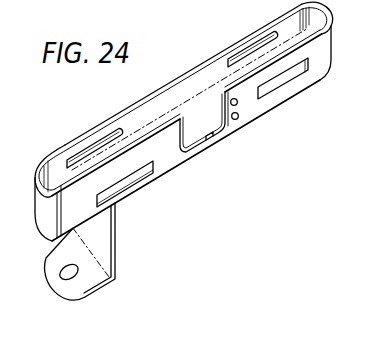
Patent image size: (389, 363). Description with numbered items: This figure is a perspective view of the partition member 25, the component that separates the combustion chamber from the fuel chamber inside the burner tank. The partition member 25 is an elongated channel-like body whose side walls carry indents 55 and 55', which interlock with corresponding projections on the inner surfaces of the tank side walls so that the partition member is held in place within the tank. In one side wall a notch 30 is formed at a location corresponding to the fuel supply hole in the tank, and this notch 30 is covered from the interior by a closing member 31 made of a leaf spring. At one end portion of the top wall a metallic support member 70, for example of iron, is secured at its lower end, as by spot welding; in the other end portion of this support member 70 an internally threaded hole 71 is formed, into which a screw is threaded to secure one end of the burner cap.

The partition member 25 is at (247, 121).
The indent 55 is at (205, 138).
The indent 55' is at (167, 91).
The notch 30 is at (212, 138).
The closing member 31 is at (191, 138).
The support member 70 is at (107, 246).
The internally threaded hole 71 is at (63, 268).